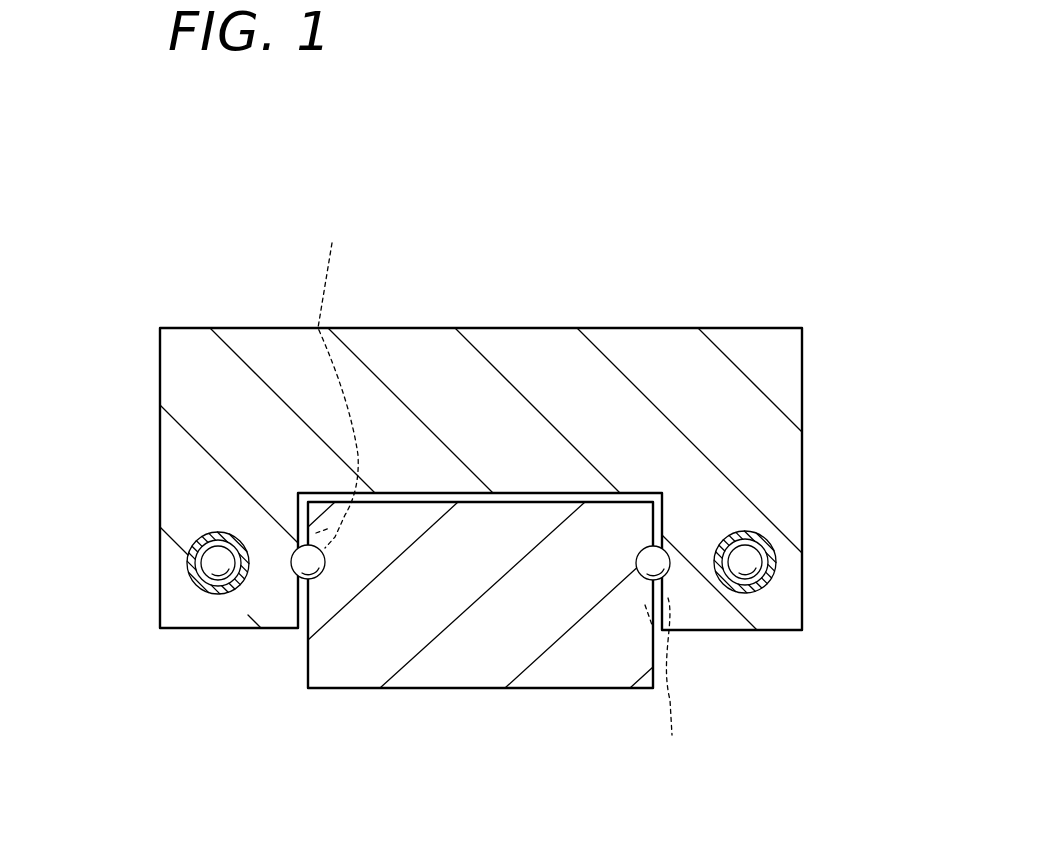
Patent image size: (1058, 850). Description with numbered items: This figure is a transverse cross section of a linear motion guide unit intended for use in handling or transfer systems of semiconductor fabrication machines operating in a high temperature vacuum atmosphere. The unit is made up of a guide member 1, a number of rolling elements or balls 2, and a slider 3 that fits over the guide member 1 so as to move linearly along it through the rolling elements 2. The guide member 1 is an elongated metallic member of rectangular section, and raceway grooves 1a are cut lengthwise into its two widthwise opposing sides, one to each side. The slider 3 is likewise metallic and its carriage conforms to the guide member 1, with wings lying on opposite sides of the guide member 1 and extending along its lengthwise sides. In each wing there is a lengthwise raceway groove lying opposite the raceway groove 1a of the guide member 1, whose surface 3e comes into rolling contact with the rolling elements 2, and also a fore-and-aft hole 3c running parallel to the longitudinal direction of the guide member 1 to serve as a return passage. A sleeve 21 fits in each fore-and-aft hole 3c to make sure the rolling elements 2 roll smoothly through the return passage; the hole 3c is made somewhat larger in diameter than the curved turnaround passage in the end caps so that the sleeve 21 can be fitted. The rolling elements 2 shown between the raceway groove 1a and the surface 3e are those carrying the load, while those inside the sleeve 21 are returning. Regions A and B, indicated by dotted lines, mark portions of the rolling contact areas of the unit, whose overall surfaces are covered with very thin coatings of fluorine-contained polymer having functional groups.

The guide member 1 is at (452, 660).
The raceway groove 1a is at (327, 576).
The rolling element 2 is at (217, 565).
The slider 3 is at (552, 328).
The fore-and-aft hole 3c is at (224, 533).
The surface of raceway groove 3e is at (293, 577).
The sleeve 21 is at (214, 591).
The region A is at (337, 378).
The region B is at (664, 684).